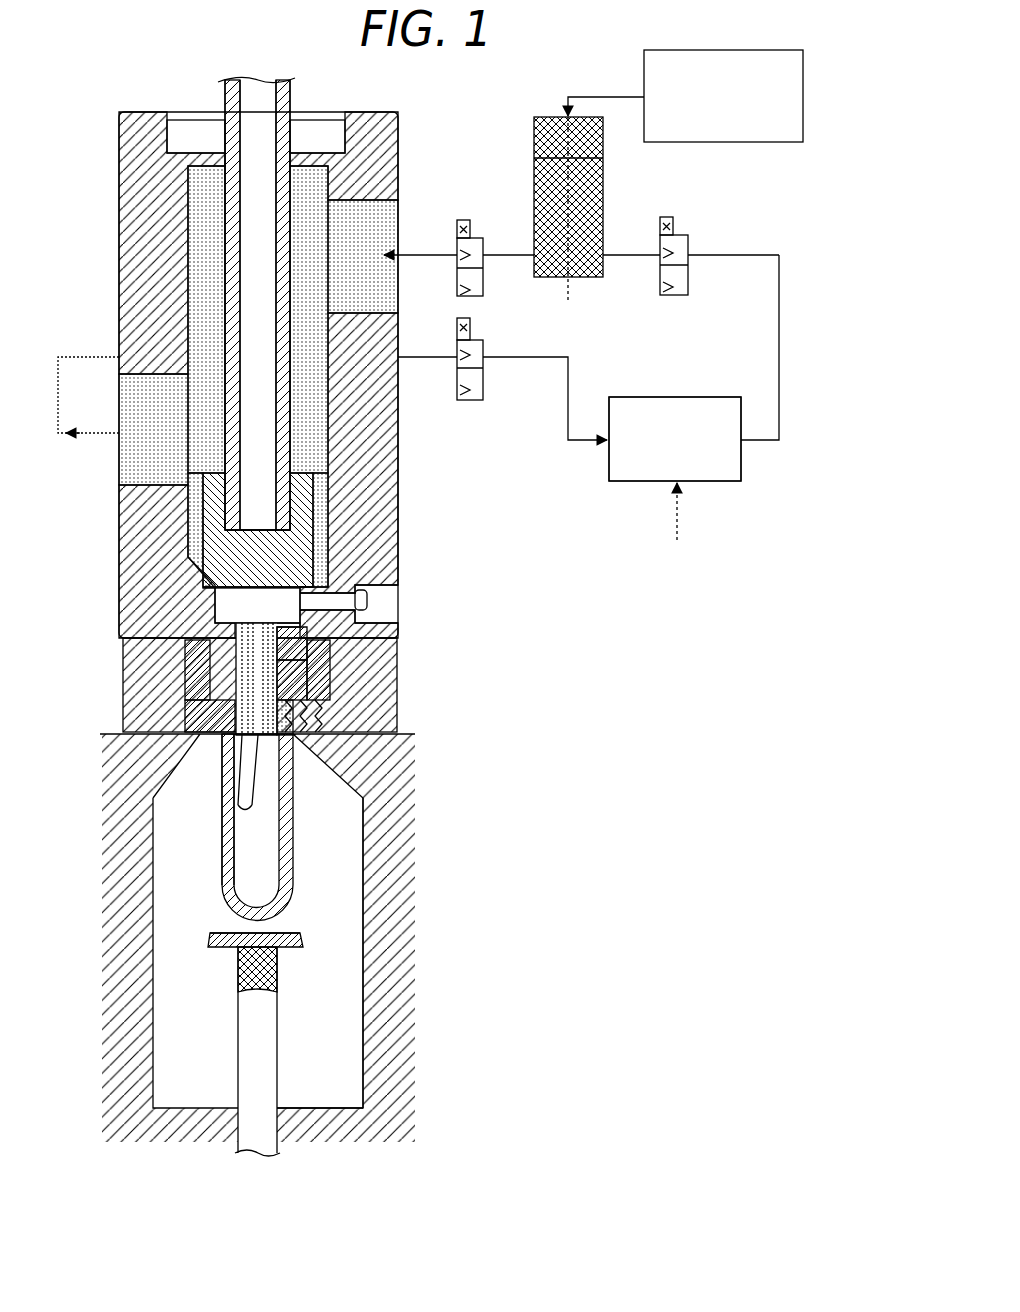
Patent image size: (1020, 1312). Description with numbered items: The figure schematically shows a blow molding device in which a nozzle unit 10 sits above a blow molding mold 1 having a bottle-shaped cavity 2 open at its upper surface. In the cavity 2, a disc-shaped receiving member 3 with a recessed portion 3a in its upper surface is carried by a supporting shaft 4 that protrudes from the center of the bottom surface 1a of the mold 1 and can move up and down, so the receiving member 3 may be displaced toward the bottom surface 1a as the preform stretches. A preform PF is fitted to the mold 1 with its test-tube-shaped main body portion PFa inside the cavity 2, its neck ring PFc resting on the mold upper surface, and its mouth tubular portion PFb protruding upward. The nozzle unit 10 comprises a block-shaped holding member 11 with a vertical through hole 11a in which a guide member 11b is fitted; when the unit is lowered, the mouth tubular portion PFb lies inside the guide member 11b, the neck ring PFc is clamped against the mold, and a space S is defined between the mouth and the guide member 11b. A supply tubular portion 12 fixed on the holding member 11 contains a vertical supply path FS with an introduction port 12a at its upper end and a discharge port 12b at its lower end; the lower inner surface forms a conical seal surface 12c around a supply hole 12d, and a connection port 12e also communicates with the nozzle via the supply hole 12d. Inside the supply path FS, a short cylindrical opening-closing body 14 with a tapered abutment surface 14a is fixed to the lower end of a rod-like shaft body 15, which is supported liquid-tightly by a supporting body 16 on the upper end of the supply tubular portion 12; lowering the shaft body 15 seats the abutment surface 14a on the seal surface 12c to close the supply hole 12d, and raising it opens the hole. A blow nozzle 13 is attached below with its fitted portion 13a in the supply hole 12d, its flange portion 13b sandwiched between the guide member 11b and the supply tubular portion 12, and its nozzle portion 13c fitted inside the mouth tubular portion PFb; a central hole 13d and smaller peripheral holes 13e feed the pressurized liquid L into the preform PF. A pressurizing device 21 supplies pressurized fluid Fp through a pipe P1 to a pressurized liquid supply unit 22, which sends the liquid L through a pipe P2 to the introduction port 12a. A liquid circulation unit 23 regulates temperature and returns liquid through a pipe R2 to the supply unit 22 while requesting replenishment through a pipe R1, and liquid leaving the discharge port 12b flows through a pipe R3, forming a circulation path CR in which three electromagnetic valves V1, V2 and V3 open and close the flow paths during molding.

The nozzle unit 10 is at (116, 233).
The supply tubular portion 12 is at (117, 508).
The supporting body 16 is at (318, 130).
The shaft body 15 is at (232, 272).
The introduction port 12a is at (368, 222).
The discharge port 12b is at (140, 461).
The seal surface 12c is at (323, 538).
The pressurized liquid L is at (308, 380).
The supply path FS is at (305, 413).
The opening-closing body 14 is at (309, 487).
The abutment surface 14a is at (305, 576).
The supply hole 12d is at (232, 596).
The connection port 12e is at (365, 593).
The holding member 11 is at (120, 695).
The through hole 11a is at (190, 678).
The guide member 11b is at (228, 728).
The blow nozzle 13 is at (318, 650).
The fitted portion 13a is at (300, 630).
The flange portion 13b is at (310, 665).
The nozzle portion 13c is at (285, 690).
The space S is at (302, 700).
The central hole 13d is at (258, 737).
The peripheral holes 13e is at (233, 803).
The neck ring PFc is at (297, 730).
The blow molding mold 1 is at (404, 975).
The cavity 2 is at (363, 1023).
The bottom surface 1a is at (308, 1108).
The preform PF is at (298, 845).
The main body portion PFa is at (223, 852).
The mouth tubular portion PFb is at (203, 736).
The receiving member 3 is at (304, 940).
The recessed portion 3a is at (257, 940).
The supporting shaft 4 is at (238, 1037).
The pressurizing device 21 is at (722, 142).
The pipe P1 is at (599, 97).
The pressurized liquid supply unit 22 is at (604, 190).
The pressurized fluid Fp is at (535, 140).
The pipe P2 is at (426, 258).
The electromagnetic valve V2 is at (484, 280).
The electromagnetic valve V1 is at (690, 278).
The pipe R2 is at (779, 343).
The pipe R3 is at (545, 357).
The electromagnetic valve V3 is at (484, 378).
The liquid circulation unit 23 is at (677, 397).
The pipe R1 is at (677, 525).
The circulation path CR is at (574, 464).